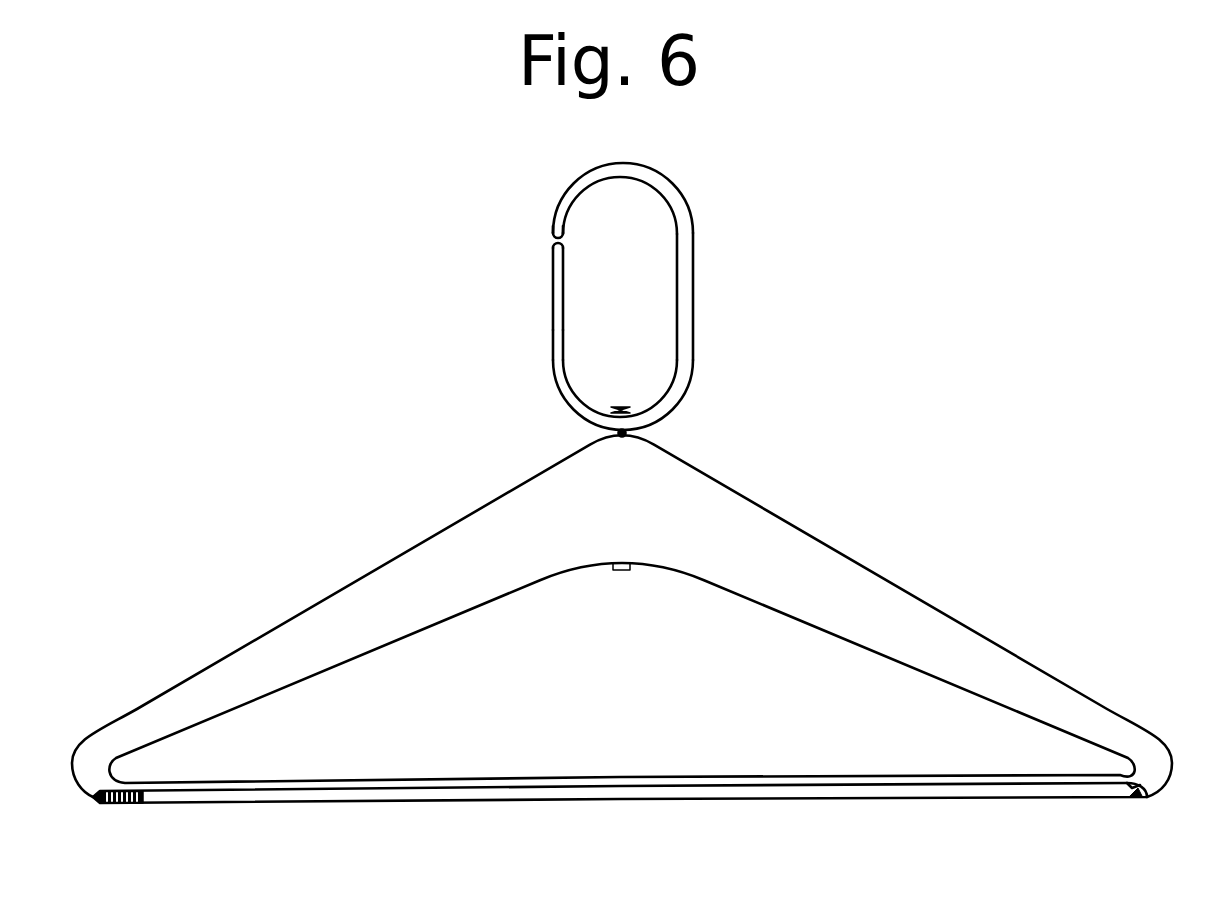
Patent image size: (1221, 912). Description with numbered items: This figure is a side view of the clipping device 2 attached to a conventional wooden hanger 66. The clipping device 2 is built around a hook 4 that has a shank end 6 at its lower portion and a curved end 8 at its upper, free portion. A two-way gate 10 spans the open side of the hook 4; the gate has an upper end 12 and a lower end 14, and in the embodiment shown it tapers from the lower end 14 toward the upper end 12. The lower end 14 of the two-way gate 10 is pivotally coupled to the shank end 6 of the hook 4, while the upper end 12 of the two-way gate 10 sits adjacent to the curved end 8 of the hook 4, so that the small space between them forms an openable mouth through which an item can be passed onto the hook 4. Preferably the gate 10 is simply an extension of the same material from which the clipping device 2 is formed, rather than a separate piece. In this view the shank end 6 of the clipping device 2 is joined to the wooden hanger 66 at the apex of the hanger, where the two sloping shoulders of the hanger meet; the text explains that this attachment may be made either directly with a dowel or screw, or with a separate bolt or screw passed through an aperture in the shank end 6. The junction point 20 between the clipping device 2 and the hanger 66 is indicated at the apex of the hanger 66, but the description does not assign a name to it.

The clipping device 2 is at (695, 204).
The hook 4 is at (695, 283).
The shank end 6 is at (698, 384).
The curved end 8 is at (550, 204).
The two-way gate 10 is at (550, 307).
The upper end 12 is at (550, 246).
The lower end 14 is at (550, 372).
The junction of hook and hanger body 20 is at (632, 433).
The wooden hanger 66 is at (177, 683).